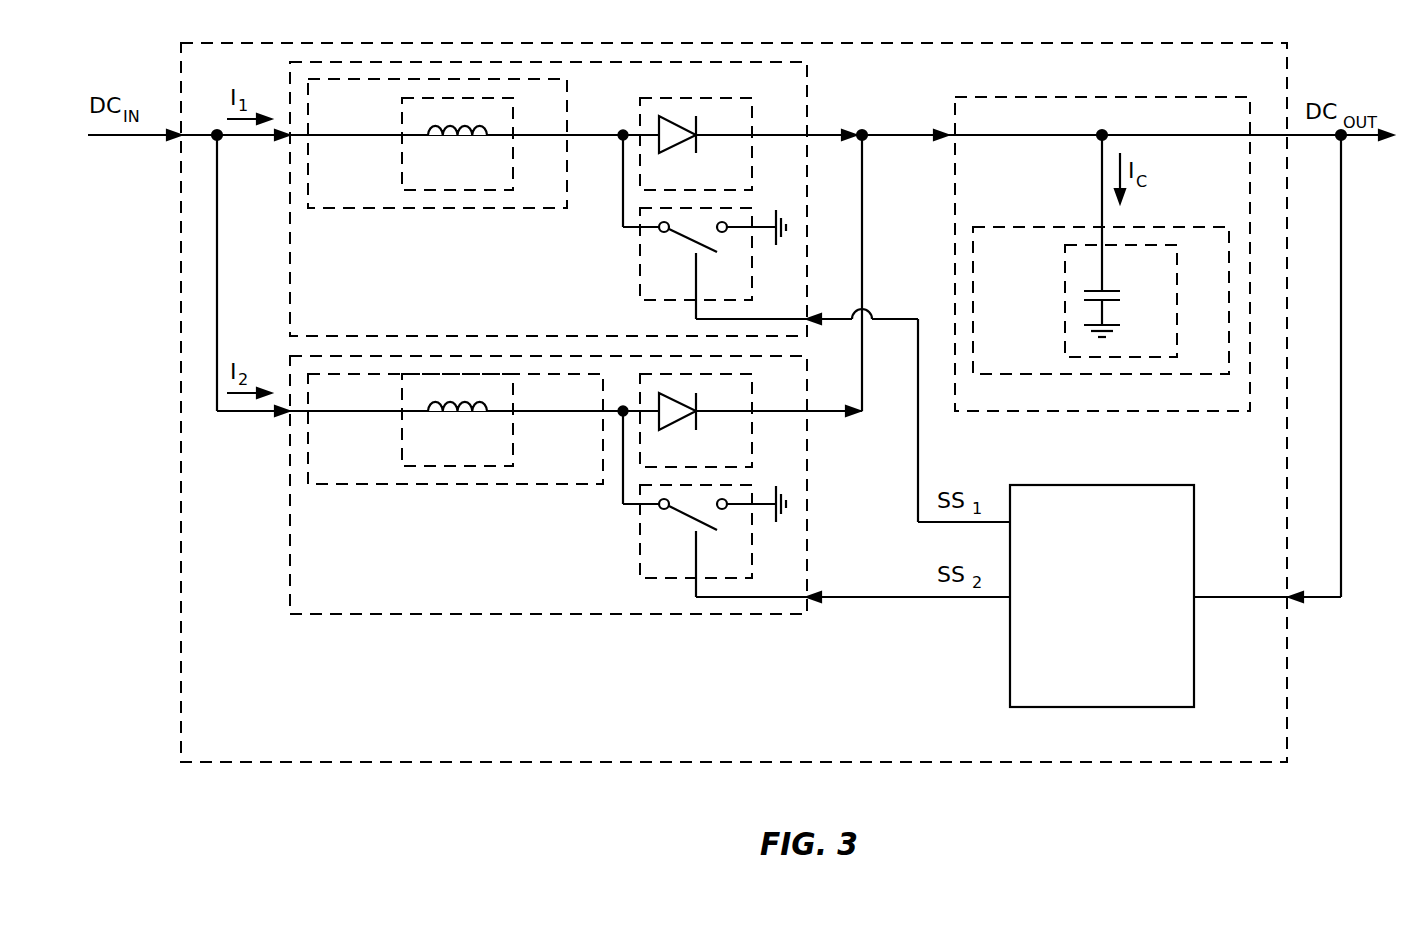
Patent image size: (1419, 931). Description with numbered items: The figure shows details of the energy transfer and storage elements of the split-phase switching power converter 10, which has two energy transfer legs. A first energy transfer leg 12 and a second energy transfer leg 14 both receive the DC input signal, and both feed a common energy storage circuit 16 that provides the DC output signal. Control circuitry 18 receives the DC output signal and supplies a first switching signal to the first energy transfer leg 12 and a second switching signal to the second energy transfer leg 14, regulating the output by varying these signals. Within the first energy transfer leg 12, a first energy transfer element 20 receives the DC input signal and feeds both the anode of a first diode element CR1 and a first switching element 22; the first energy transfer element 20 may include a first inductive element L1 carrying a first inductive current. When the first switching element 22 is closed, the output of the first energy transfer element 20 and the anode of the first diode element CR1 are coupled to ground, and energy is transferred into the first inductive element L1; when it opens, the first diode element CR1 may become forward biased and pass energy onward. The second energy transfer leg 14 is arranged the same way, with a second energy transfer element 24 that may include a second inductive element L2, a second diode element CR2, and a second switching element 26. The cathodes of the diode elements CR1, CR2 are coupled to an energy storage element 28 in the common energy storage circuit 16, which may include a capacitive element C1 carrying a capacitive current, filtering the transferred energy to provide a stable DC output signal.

The split-phase switching power converter 10 is at (1262, 744).
The first energy transfer leg 12 is at (351, 323).
The second energy transfer leg 14 is at (351, 600).
The common energy storage circuit 16 is at (995, 195).
The control circuitry 18 is at (1118, 633).
The first energy transfer element 20 is at (361, 190).
The first switching element 22 is at (738, 288).
The second energy transfer element 24 is at (361, 467).
The second switching element 26 is at (738, 564).
The energy storage element 28 is at (1025, 352).
The first inductive element L1 is at (471, 178).
The second inductive element L2 is at (470, 455).
The first diode element CR1 is at (733, 182).
The second diode element CR2 is at (735, 458).
The capacitive element C1 is at (1156, 282).